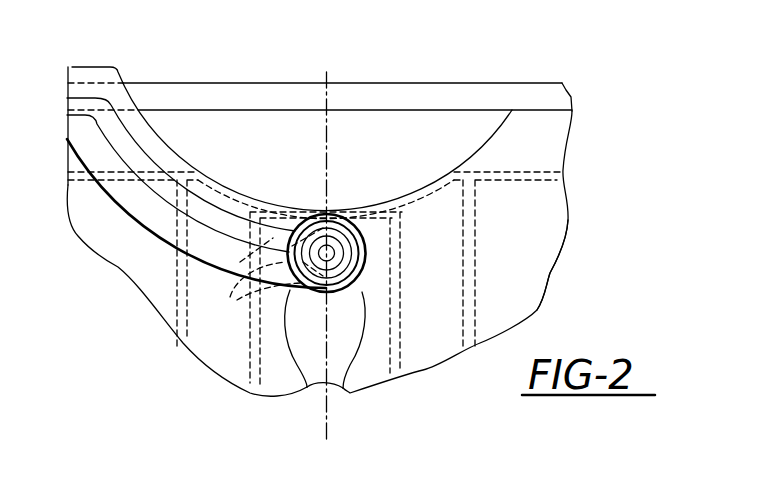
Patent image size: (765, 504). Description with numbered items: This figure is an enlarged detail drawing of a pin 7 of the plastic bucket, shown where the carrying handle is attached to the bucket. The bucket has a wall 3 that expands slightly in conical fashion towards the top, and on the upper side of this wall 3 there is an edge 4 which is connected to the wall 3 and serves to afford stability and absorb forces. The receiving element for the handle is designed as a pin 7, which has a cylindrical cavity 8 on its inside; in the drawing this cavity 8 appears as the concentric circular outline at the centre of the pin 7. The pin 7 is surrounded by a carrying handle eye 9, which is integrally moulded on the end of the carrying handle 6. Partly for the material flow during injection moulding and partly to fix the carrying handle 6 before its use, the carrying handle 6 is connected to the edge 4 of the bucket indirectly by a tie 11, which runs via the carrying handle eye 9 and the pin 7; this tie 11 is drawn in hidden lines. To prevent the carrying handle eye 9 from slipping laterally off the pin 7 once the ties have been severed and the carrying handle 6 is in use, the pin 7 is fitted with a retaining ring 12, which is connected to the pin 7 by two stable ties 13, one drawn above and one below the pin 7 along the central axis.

The wall 3 is at (211, 136).
The edge 4 is at (550, 128).
The carrying handle 6 is at (120, 145).
The pin 7 is at (370, 220).
The cylindrical cavity 8 is at (366, 253).
The carrying handle eye 9 is at (307, 388).
The tie 11 is at (262, 272).
The retaining ring 12 is at (342, 217).
The stable tie 13 is at (308, 217).